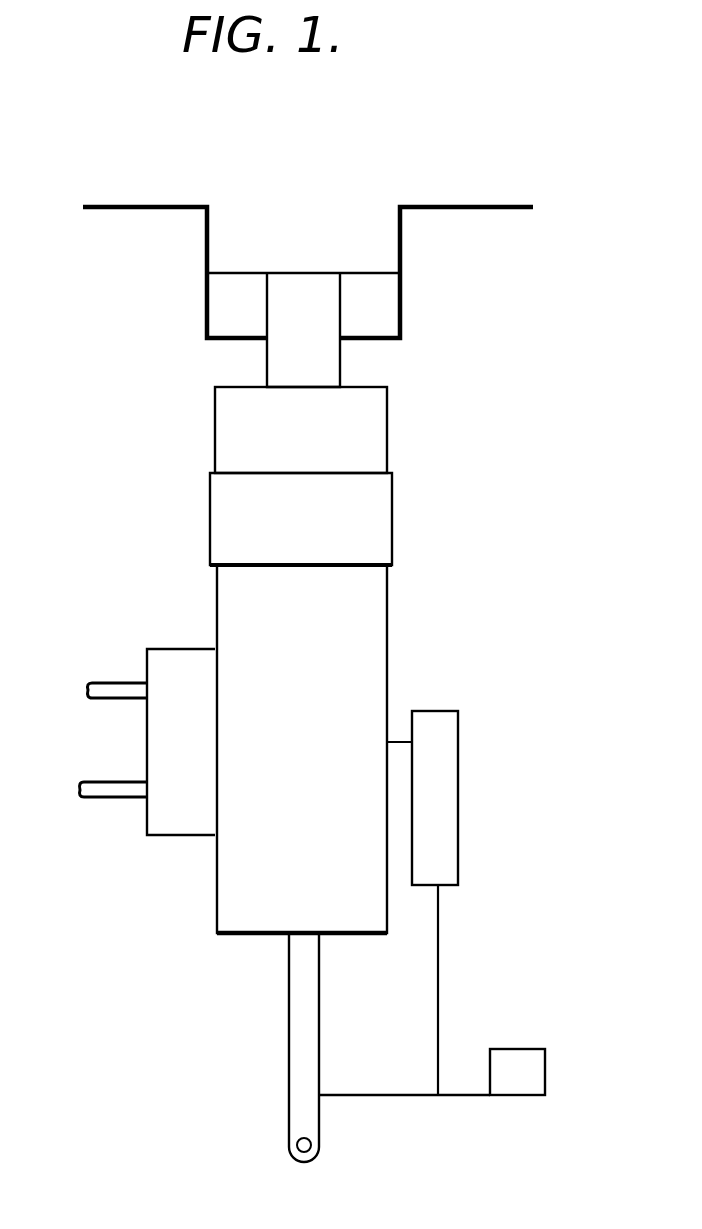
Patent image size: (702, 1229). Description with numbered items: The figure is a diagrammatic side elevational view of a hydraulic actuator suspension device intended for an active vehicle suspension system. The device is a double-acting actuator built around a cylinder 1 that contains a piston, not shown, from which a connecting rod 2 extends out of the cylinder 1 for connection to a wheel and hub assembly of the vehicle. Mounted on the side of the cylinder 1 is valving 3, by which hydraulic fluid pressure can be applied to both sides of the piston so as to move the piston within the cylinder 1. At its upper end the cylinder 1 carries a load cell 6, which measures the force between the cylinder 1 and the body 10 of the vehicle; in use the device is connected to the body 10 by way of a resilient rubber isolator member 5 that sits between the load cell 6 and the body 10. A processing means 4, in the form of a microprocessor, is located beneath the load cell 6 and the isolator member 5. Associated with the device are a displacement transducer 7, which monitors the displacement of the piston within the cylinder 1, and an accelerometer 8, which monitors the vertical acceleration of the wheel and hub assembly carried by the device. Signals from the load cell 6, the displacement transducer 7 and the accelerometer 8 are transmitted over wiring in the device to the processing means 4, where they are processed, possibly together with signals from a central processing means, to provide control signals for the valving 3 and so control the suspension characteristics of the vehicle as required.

The cylinder 1 is at (372, 638).
The connecting rod 2 is at (297, 1027).
The valving 3 is at (157, 817).
The processing means 4 is at (368, 523).
The resilient isolator member 5 is at (380, 305).
The load cell 6 is at (232, 417).
The displacement transducer 7 is at (443, 827).
The accelerometer 8 is at (505, 1058).
The body 10 is at (500, 206).